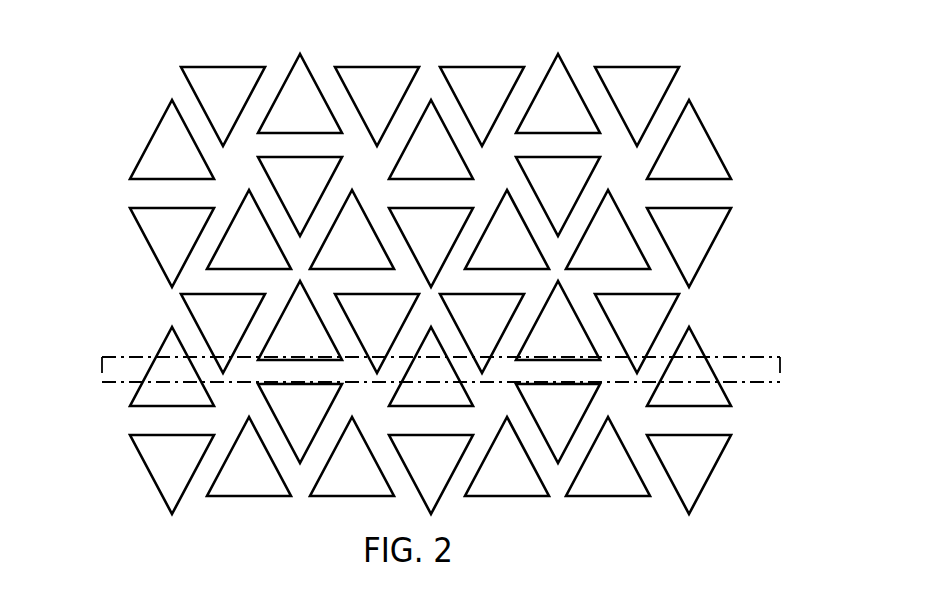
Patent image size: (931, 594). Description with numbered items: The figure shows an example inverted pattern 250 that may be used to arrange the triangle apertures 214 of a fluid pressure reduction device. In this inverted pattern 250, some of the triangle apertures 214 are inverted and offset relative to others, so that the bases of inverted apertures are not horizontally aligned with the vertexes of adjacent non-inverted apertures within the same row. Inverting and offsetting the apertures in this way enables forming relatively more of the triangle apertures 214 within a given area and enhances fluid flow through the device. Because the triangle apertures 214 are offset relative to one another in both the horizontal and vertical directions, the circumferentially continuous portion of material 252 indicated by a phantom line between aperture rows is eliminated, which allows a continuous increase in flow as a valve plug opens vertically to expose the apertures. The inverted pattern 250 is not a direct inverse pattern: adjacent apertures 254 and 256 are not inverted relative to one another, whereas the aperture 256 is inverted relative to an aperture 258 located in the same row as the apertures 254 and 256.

The inverted pattern 250 is at (128, 65).
The aperture 254 is at (382, 67).
The aperture 256 is at (495, 67).
The aperture 258 is at (570, 73).
The triangle apertures 214 is at (727, 223).
The circumferentially continuous portion of material 252 is at (765, 383).